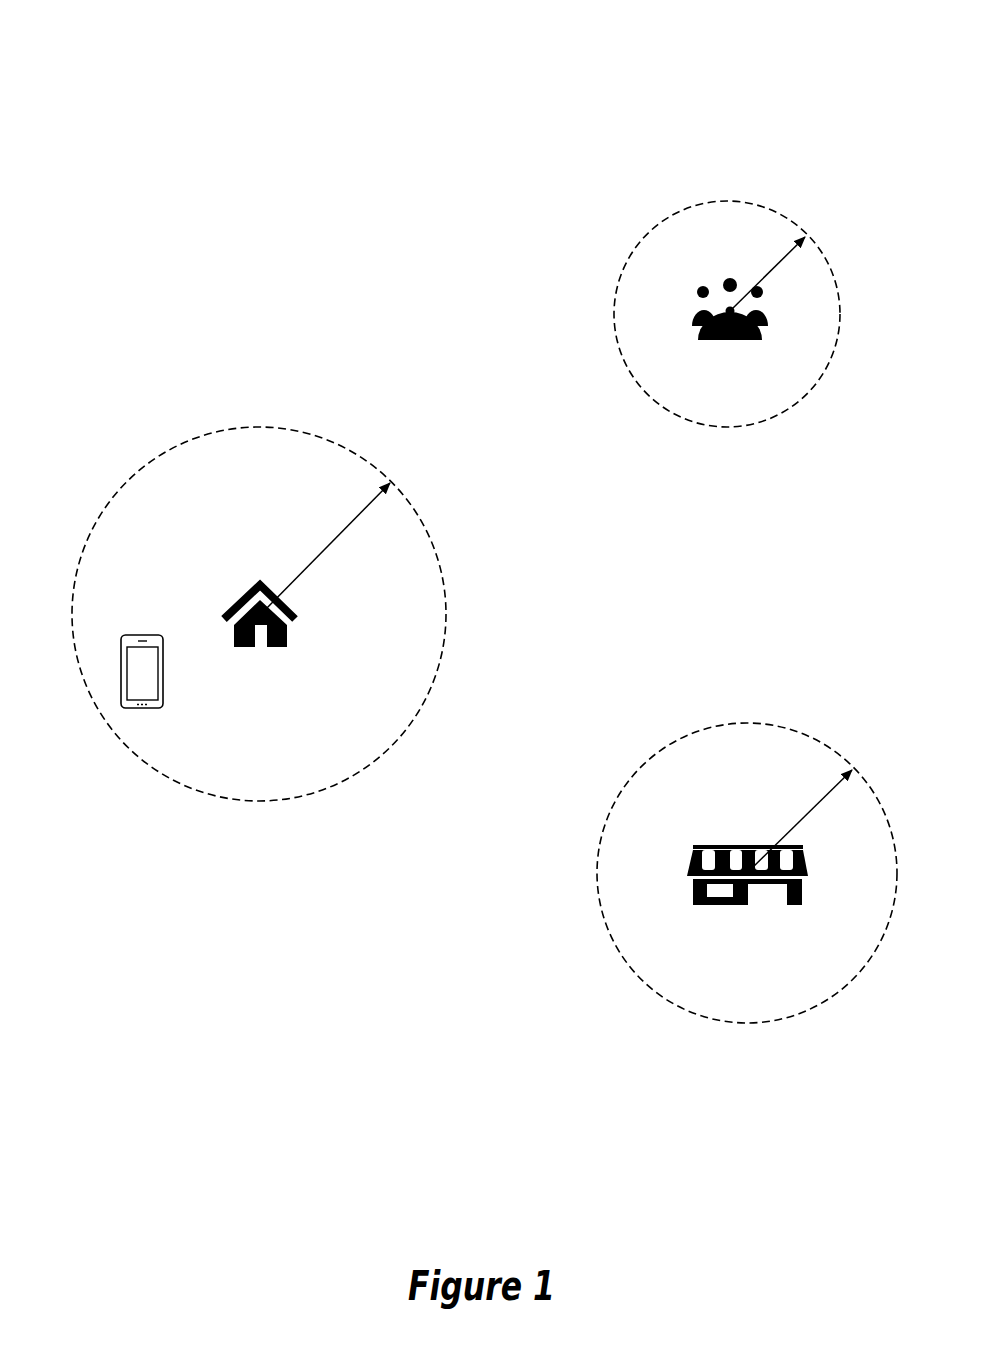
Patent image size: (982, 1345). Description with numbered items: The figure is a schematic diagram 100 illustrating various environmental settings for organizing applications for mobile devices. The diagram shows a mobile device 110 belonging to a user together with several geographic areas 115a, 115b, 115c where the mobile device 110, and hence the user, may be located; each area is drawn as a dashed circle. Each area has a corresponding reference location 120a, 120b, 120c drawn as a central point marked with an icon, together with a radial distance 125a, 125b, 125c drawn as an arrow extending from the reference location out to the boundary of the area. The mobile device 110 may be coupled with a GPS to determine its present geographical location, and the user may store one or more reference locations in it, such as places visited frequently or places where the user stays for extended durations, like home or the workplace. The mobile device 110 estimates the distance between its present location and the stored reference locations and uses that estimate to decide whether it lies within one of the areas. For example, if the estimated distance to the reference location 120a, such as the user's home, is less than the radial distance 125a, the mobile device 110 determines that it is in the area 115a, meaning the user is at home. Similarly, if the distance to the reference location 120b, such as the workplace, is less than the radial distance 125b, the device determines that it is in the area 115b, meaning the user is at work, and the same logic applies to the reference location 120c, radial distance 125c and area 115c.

The schematic diagram 100 is at (113, 87).
The mobile device 110 is at (143, 634).
The geographic area 115a is at (255, 803).
The geographic area 115b is at (725, 428).
The geographic area 115c is at (755, 1023).
The reference location 120a is at (263, 648).
The reference location 120b is at (727, 340).
The reference location 120c is at (747, 903).
The radial distance 125a is at (327, 541).
The radial distance 125b is at (775, 270).
The radial distance 125c is at (802, 823).